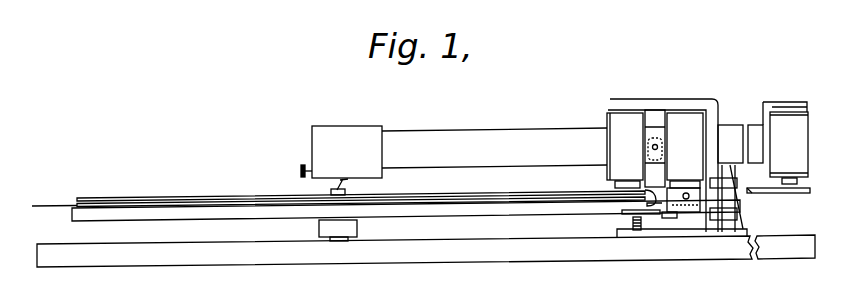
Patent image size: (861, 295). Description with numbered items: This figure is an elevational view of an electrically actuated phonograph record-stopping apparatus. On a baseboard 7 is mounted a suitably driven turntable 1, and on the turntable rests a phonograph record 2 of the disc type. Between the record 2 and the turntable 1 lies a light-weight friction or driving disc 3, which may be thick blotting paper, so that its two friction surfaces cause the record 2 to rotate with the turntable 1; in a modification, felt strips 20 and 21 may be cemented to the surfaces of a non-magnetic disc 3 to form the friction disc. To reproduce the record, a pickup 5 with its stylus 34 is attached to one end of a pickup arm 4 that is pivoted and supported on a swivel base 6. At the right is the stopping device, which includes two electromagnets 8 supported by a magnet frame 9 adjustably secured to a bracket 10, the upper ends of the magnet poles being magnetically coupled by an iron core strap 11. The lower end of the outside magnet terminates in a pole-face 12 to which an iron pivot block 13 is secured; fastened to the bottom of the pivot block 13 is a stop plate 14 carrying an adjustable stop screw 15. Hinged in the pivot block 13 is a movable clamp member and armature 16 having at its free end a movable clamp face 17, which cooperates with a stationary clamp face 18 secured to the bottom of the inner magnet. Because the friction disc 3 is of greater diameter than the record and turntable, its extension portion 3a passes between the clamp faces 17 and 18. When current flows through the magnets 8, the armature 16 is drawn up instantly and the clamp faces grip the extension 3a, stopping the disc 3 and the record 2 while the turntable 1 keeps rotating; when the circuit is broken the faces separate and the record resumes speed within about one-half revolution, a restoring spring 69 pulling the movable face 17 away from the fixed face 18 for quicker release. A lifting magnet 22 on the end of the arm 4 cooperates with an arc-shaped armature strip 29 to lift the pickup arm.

The turntable 1 is at (202, 213).
The phonograph record 2 is at (120, 197).
The friction disc 3 is at (170, 202).
The extension portion of the friction disc 3a is at (52, 203).
The pickup arm 4 is at (506, 140).
The pickup 5 is at (356, 134).
The swivel base 6 is at (655, 228).
The baseboard 7 is at (473, 258).
The electromagnets 8 is at (612, 125).
The magnet frame 9 is at (698, 98).
The bracket 10 is at (740, 218).
The iron core strap 11 is at (655, 107).
The pole-face 12 is at (735, 240).
The iron pivot block 13 is at (702, 228).
The stop plate 14 is at (676, 228).
The adjustable stop screw 15 is at (673, 225).
The movable clamp member and armature 16 is at (643, 213).
The movable clamp face 17 is at (626, 209).
The stationary clamp face 18 is at (608, 186).
The felt strip 20 is at (282, 194).
The felt strip 21 is at (276, 208).
The lifting magnet 22 is at (783, 128).
The armature strip 29 is at (795, 194).
The pickup stylus 34 is at (350, 183).
The restoring spring 69 is at (637, 226).